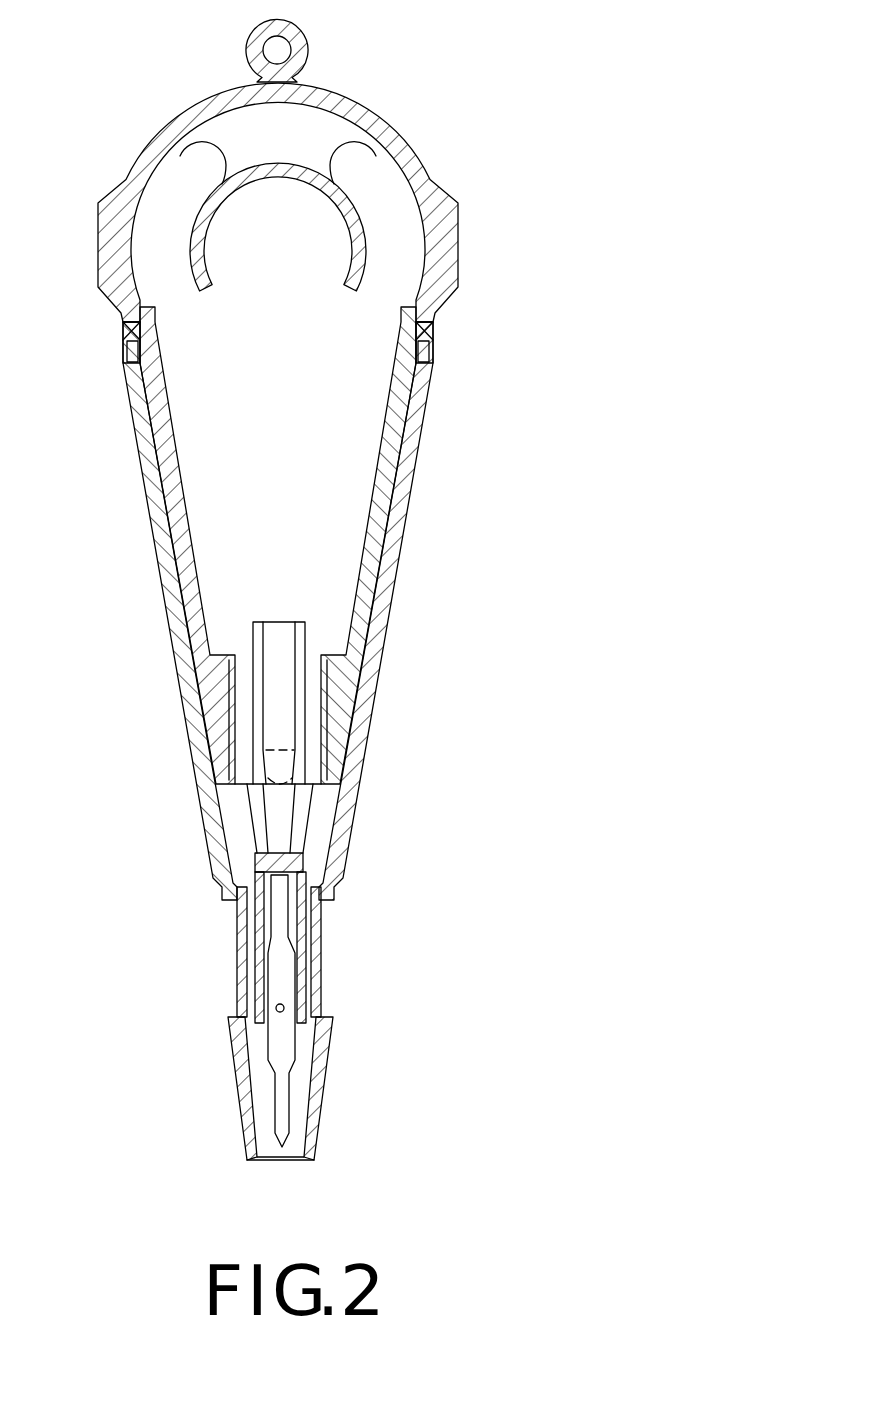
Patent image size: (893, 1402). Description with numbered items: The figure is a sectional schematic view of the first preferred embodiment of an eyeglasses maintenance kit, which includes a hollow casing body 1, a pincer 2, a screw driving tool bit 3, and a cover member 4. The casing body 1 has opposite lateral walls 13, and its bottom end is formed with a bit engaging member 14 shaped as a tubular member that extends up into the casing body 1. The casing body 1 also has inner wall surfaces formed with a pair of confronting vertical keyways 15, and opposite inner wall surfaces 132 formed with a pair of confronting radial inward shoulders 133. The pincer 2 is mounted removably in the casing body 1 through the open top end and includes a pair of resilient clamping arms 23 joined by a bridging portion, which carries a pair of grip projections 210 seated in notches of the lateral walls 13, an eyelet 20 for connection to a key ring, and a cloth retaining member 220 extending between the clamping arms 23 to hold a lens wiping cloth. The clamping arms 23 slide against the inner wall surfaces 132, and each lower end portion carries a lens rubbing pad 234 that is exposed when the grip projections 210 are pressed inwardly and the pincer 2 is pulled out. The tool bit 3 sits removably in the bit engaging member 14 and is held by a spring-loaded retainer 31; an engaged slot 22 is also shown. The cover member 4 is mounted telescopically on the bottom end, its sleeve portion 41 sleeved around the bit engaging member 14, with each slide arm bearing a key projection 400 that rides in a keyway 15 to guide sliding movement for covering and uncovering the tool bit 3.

The casing body 1 is at (436, 501).
The pincer 2 is at (452, 106).
The screw driving tool bit 3 is at (272, 1066).
The cover member 4 is at (330, 1029).
The lateral walls 13 is at (126, 345).
The bit engaging member 14 is at (313, 931).
The vertical keyways 15 is at (305, 642).
The eyelet 20 is at (300, 43).
The slot 22 is at (436, 347).
The resilient clamping arms 23 is at (180, 528).
The spring-loaded retainer 31 is at (276, 1007).
The sleeve portion 41 is at (322, 1124).
The inner wall surfaces 132 is at (180, 602).
The radial inward shoulders 133 is at (313, 786).
The grip projections 210 is at (458, 250).
The cloth retaining member 220 is at (217, 207).
The lens rubbing pad 234 is at (240, 650).
The key projection 400 is at (300, 758).